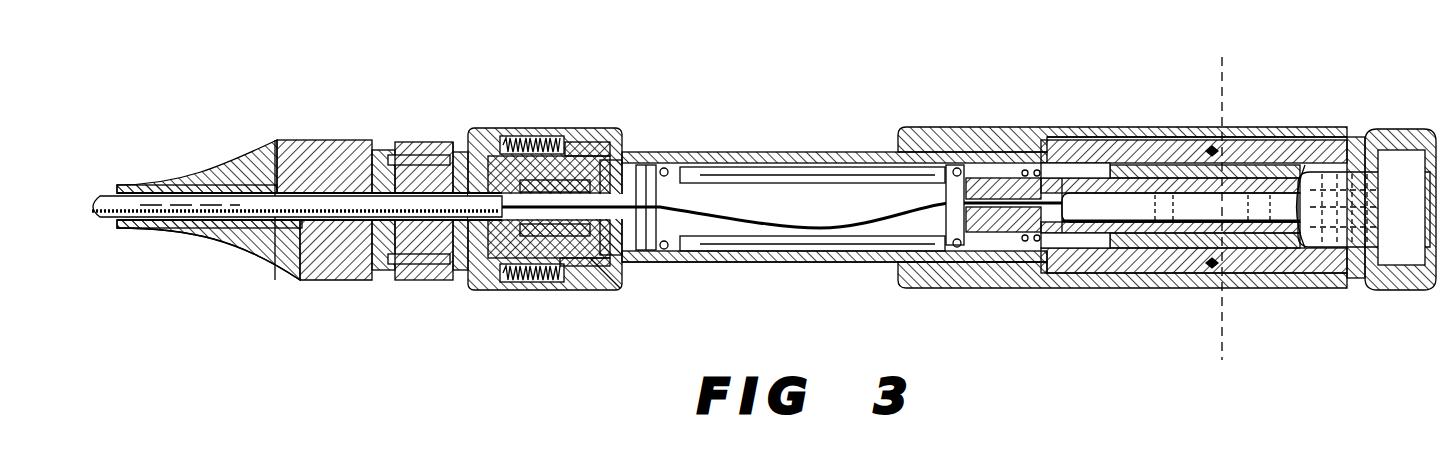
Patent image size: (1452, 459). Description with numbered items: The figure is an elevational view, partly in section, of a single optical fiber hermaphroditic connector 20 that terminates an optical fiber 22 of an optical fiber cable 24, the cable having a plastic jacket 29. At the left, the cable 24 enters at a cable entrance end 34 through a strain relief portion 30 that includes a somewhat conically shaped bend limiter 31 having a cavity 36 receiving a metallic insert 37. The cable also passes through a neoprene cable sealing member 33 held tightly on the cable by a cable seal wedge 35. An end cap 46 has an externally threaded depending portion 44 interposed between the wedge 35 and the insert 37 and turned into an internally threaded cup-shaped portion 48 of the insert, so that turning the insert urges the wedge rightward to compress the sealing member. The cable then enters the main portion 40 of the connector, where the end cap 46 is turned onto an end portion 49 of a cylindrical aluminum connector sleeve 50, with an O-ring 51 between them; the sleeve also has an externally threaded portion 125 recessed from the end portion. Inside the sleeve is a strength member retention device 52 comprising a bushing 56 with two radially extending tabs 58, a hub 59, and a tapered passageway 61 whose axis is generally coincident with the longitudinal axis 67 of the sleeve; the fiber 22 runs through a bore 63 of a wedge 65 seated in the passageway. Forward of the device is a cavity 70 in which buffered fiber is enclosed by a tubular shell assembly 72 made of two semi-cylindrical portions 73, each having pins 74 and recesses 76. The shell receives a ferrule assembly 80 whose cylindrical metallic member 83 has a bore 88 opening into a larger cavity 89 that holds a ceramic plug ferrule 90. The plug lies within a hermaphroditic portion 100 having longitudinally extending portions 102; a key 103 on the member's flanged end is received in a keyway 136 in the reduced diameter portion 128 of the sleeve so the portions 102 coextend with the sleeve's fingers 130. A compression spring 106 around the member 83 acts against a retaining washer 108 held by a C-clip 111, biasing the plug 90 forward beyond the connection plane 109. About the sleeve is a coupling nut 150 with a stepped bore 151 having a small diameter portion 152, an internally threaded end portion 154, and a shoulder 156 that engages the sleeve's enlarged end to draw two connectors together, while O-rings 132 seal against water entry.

The single optical fiber hermaphroditic connector 20 is at (1193, 60).
The optical fiber 22 is at (772, 228).
The optical fiber cable 24 is at (106, 192).
The jacket 29 is at (104, 222).
The strain relief portion 30 is at (252, 142).
The bend limiter 31 is at (236, 248).
The cable sealing member 33 is at (422, 142).
The cable entrance end 34 is at (460, 130).
The cable seal wedge 35 is at (412, 272).
The cavity 36 is at (262, 264).
The metallic insert 37 is at (318, 272).
The main portion 40 is at (705, 150).
The depending portion 44 is at (440, 268).
The end cap 46 is at (483, 292).
The cup-shaped portion 48 is at (385, 273).
The end portion 49 is at (548, 262).
The connector sleeve 50 is at (778, 263).
The O-ring 51 is at (522, 282).
The strength member retention device 52 is at (562, 168).
The bushing 56 is at (582, 150).
The tabs 58 is at (488, 130).
The hub 59 is at (570, 262).
The passageway 61 is at (520, 137).
The bore 63 is at (628, 160).
The wedge 65 is at (606, 190).
The longitudinal axis 67 is at (190, 204).
The cavity 70 is at (840, 185).
The tubular shell assembly 72 is at (738, 163).
The semi-cylindrical portions 73 is at (768, 168).
The pins 74 is at (953, 248).
The recesses 76 is at (952, 168).
The ferrule assembly 80 is at (1150, 165).
The cylindrical metallic member 83 is at (992, 252).
The bore 88 is at (1030, 255).
The cavity 89 is at (1090, 250).
The plug ferrule 90 is at (1075, 178).
The hermaphroditic portion 100 is at (1128, 250).
The longitudinally extending portions 102 is at (1245, 268).
The key 103 is at (1120, 190).
The compression spring 106 is at (1050, 168).
The retaining washer 108 is at (1020, 165).
The connection plane 109 is at (1225, 78).
The C-clip 111 is at (975, 250).
The externally threaded portion 125 is at (600, 268).
The reduced diameter portion 128 is at (1052, 245).
The fingers 130 is at (1288, 270).
The O-rings 132 is at (1210, 272).
The keyway 136 is at (1088, 190).
The coupling nut 150 is at (1280, 126).
The stepped bore 151 is at (1205, 145).
The small diameter portion 152 is at (955, 130).
The end portion 154 is at (1322, 127).
The shoulder 156 is at (1058, 275).